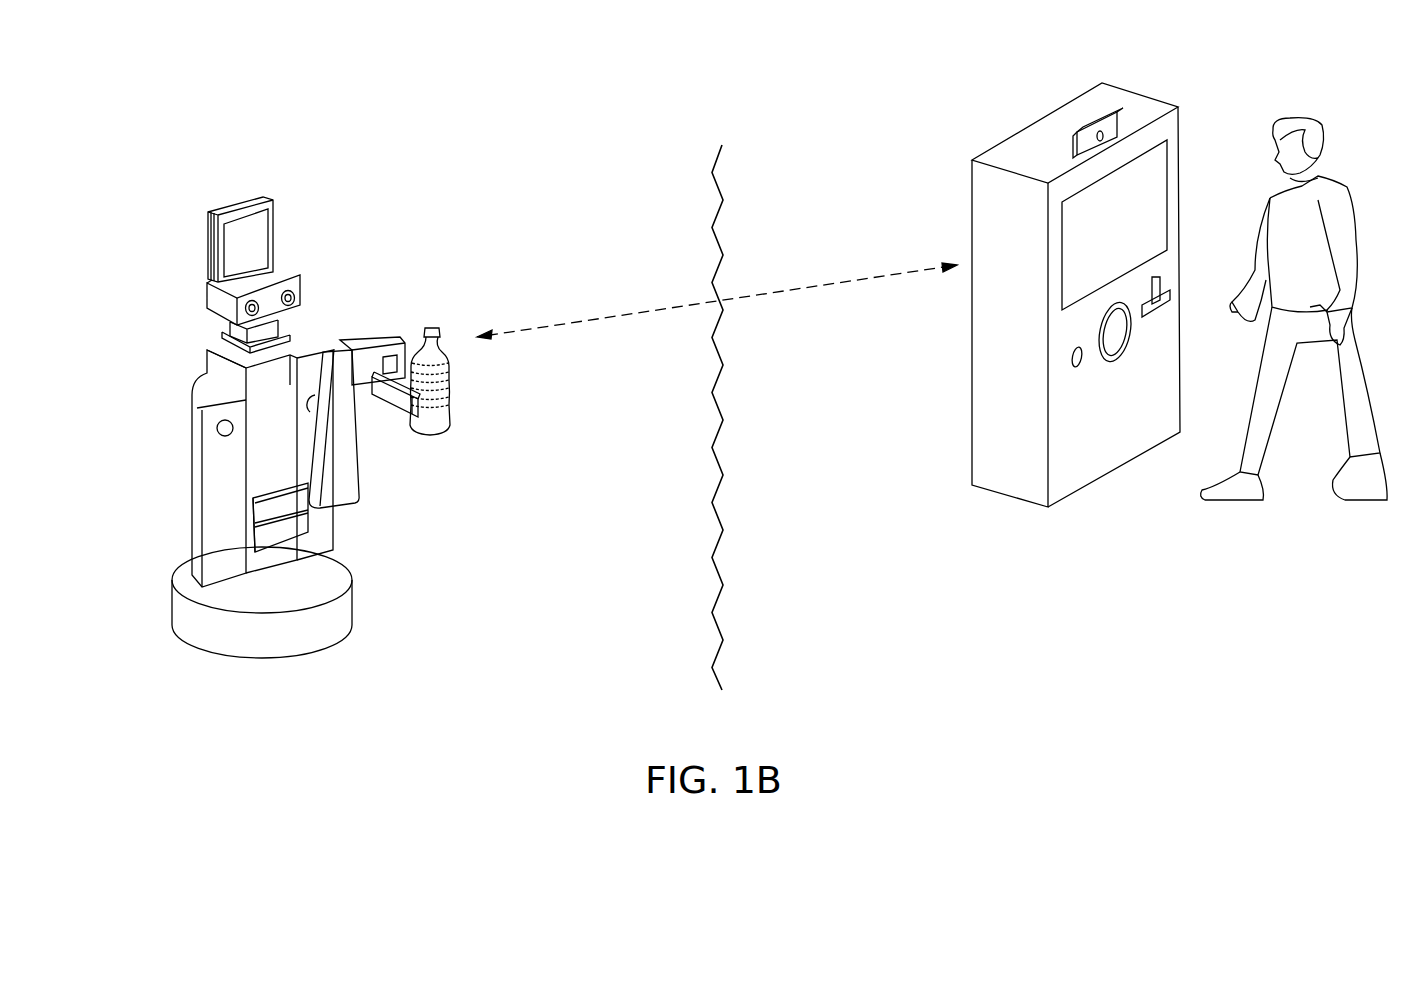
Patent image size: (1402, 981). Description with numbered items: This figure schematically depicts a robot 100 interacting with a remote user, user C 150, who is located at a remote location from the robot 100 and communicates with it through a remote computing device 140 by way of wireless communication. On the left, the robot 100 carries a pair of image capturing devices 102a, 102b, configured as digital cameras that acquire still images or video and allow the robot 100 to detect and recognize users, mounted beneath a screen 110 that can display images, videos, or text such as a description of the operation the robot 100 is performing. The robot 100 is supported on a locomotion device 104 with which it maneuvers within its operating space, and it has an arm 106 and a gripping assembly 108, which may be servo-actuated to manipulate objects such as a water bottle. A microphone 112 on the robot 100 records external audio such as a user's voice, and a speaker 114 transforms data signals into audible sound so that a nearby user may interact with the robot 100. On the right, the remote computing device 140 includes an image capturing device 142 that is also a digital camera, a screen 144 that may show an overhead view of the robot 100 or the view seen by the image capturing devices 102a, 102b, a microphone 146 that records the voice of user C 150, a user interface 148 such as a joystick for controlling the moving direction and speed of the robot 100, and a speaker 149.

The robot 100 is at (182, 522).
The image capturing device 102a is at (246, 309).
The image capturing device 102b is at (293, 296).
The locomotion device 104 is at (352, 600).
The arm 106 is at (360, 340).
The gripping assembly 108 is at (404, 412).
The screen 110 is at (273, 230).
The microphone 112 is at (308, 395).
The speaker 114 is at (215, 427).
The remote computing device 140 is at (1058, 110).
The image capturing device 142 is at (1113, 110).
The screen 144 is at (1167, 166).
The microphone 146 is at (1106, 365).
The user interface 148 is at (1170, 292).
The speaker 149 is at (1072, 358).
The user C 150 is at (1344, 190).